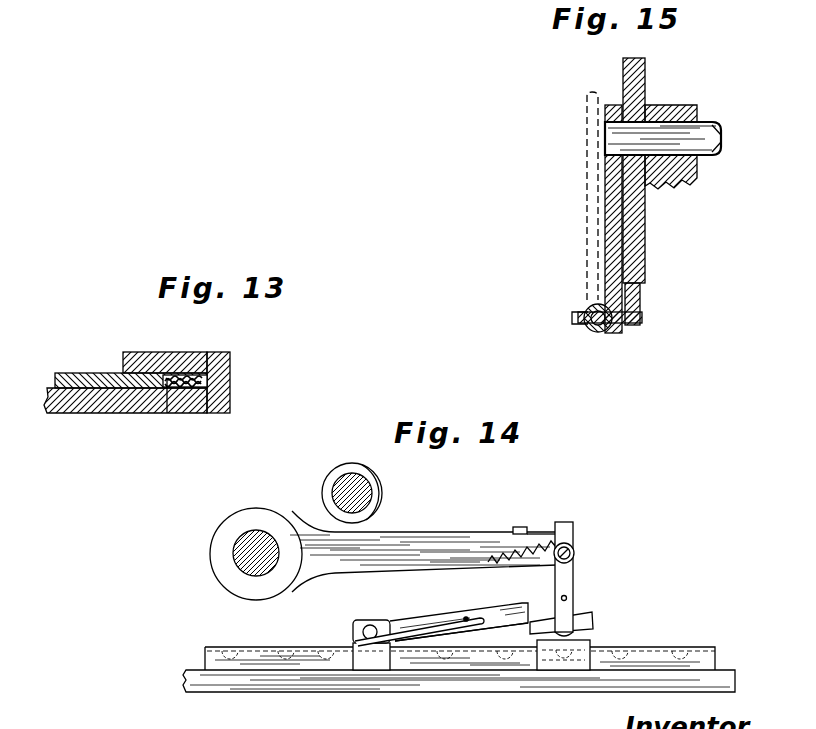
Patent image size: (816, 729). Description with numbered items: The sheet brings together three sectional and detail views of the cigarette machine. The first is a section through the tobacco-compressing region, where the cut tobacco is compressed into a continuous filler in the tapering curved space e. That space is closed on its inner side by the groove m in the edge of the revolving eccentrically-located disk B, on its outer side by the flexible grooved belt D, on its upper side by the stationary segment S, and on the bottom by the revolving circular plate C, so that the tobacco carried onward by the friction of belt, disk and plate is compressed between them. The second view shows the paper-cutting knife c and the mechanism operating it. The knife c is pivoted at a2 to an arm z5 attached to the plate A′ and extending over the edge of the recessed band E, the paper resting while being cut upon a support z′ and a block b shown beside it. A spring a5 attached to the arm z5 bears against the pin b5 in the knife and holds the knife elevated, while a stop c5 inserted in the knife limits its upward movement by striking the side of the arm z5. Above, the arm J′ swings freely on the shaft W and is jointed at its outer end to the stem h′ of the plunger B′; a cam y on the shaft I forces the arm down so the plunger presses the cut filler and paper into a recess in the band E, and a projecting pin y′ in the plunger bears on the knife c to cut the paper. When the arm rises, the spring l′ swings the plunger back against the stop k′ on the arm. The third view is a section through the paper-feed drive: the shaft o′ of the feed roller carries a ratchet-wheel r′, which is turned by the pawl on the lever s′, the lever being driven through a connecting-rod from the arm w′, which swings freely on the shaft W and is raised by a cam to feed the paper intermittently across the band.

In FIG. 13, the circular plate C is at (125, 412).
In FIG. 13, the eccentrically-located compressing-disk B is at (131, 370).
In FIG. 13, the stationary segment S is at (165, 351).
In FIG. 13, the grooved belt D is at (231, 372).
In FIG. 13, the tapering curved space e is at (203, 376).
In FIG. 13, the groove m is at (167, 408).
In FIG. 14, the bed or plate A′ is at (320, 692).
In FIG. 14, the recessed band E is at (260, 657).
In FIG. 14, the arm z5 is at (376, 658).
In FIG. 14, the support z′ is at (556, 660).
In FIG. 14, the stop block b is at (592, 635).
In FIG. 14, the pivot a2 is at (375, 623).
In FIG. 14, the knife c is at (459, 615).
In FIG. 14, the stop c5 is at (393, 621).
In FIG. 14, the spring a5 is at (460, 628).
In FIG. 14, the pin b5 is at (466, 616).
In FIG. 14, the arm J′ is at (423, 551).
In FIG. 14, the shaft W is at (236, 547).
In FIG. 14, the shaft I is at (331, 488).
In FIG. 14, the cam y is at (385, 491).
In FIG. 14, the spring l′ is at (500, 552).
In FIG. 14, the stop k′ is at (534, 526).
In FIG. 14, the plunger B′ is at (575, 586).
In FIG. 14, the stem of the plunger h′ is at (572, 574).
In FIG. 14, the projecting pin y′ is at (574, 596).
In FIG. 15, the projecting pin y′ is at (590, 253).
In FIG. 15, the ratchet-wheel r′ is at (642, 238).
In FIG. 15, the lever s′ is at (607, 211).
In FIG. 15, the shaft of the roller o′ is at (710, 128).
In FIG. 15, the arm w′ is at (642, 299).